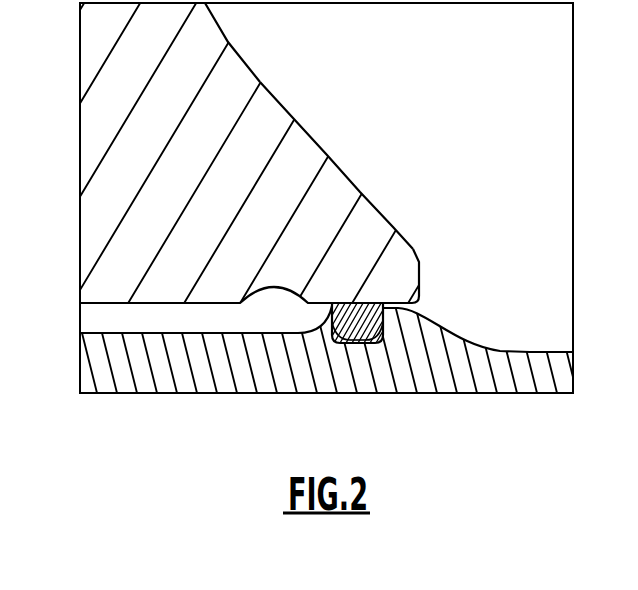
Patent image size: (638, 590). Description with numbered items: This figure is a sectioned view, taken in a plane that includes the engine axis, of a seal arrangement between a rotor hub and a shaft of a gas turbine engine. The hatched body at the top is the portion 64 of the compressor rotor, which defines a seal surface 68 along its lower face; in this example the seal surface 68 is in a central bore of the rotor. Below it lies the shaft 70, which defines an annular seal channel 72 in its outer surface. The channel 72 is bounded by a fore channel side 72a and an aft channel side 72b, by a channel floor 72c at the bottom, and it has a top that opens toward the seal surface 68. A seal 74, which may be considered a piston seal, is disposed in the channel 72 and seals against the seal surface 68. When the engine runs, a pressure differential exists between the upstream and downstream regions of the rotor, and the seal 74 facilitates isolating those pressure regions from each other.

The portion of the rotor 64 is at (348, 172).
The seal 74 is at (399, 239).
The seal surface 68 is at (418, 305).
The shaft 70 is at (90, 367).
The annular seal channel 72 is at (348, 373).
The fore channel side 72a is at (381, 342).
The aft channel side 72b is at (332, 338).
The channel floor 72c is at (342, 344).